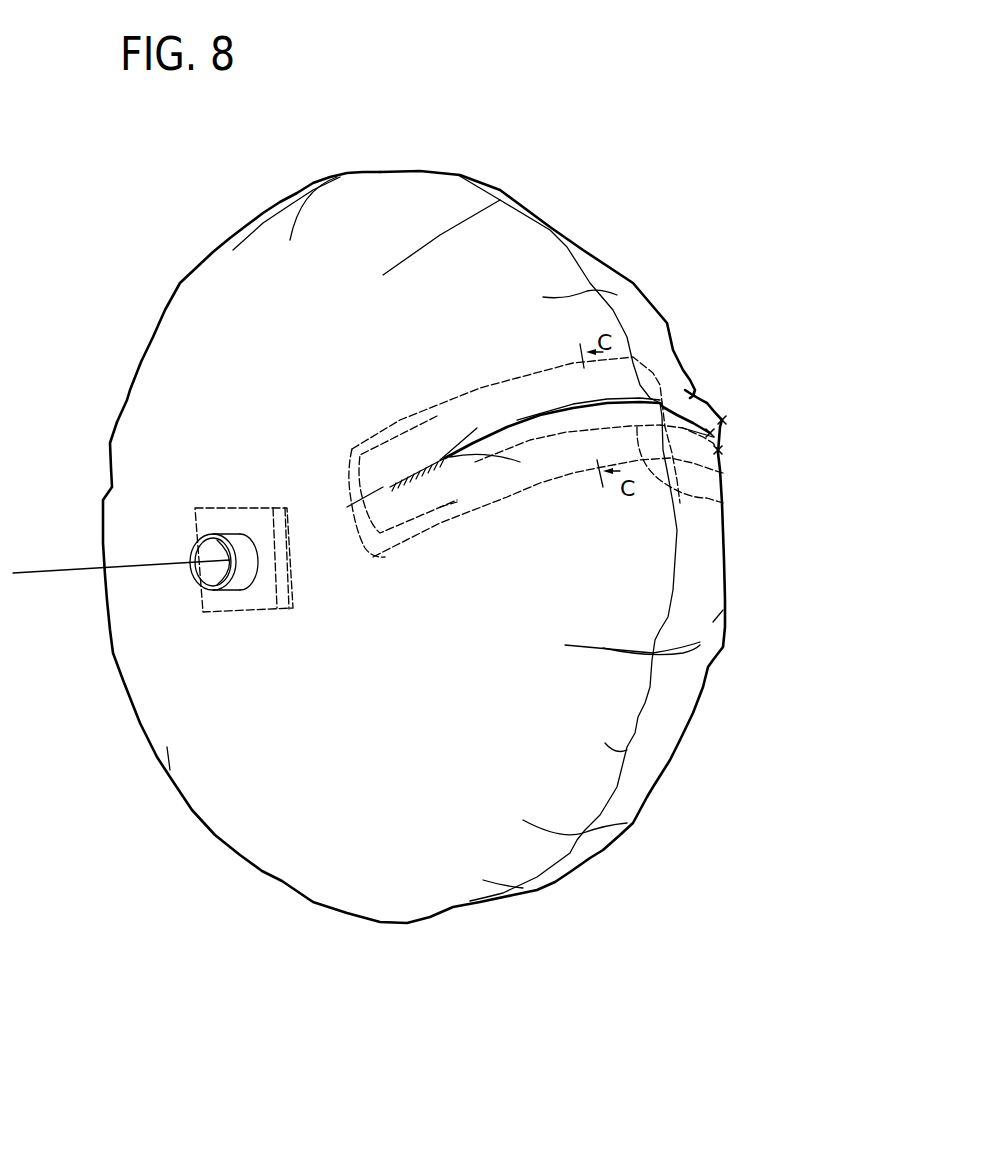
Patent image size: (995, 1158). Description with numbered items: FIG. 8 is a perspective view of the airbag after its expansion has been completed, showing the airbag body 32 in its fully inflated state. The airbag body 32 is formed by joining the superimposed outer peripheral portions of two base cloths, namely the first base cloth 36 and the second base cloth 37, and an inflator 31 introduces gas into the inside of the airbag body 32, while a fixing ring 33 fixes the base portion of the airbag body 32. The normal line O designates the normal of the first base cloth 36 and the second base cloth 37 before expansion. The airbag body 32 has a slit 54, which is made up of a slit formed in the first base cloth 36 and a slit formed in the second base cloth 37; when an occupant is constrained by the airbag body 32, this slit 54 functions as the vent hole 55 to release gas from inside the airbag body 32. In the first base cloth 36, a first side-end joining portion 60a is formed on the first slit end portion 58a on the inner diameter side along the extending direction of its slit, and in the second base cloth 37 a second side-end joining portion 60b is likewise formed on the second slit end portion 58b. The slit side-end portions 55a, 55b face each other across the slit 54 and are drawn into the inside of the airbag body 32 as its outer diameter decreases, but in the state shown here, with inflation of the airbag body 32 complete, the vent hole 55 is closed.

The airbag body 32 is at (106, 252).
The second base cloth 37 is at (190, 298).
The first base cloth 36 is at (563, 228).
The slit 54 is at (648, 400).
The vent hole 55 is at (626, 398).
The slit side-end portion 55a is at (670, 390).
The slit side-end portion 55b is at (723, 473).
The first slit end portion 58a is at (727, 417).
The second slit end portion 58b is at (418, 458).
The first side-end joining portion 60a is at (723, 452).
The second side-end joining portion 60b is at (380, 486).
The fixing ring 33 is at (227, 518).
The inflator 31 is at (237, 582).
The normal line O is at (47, 568).